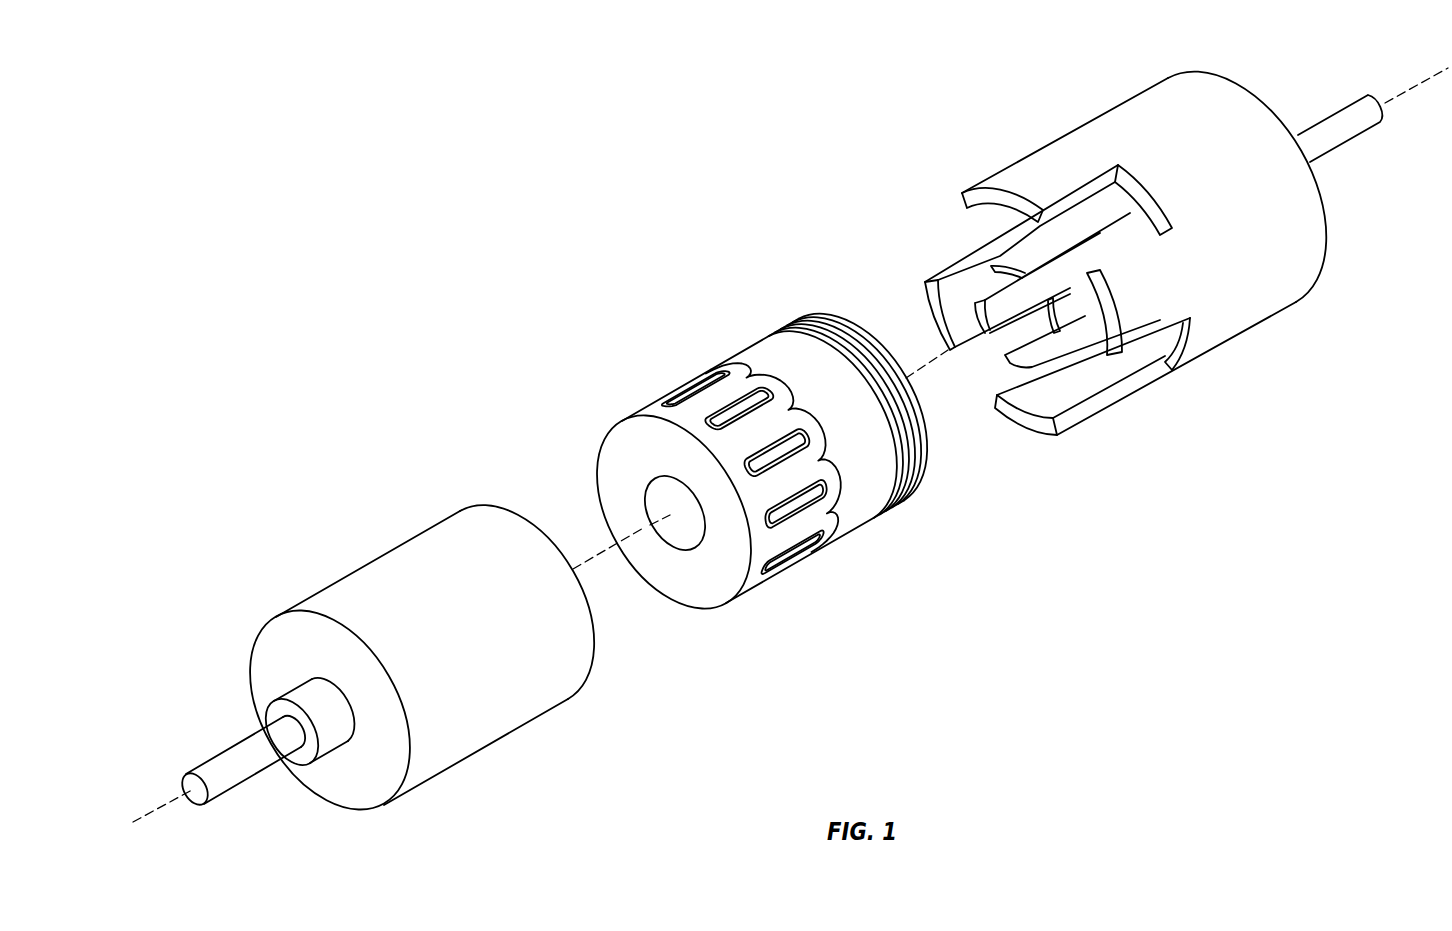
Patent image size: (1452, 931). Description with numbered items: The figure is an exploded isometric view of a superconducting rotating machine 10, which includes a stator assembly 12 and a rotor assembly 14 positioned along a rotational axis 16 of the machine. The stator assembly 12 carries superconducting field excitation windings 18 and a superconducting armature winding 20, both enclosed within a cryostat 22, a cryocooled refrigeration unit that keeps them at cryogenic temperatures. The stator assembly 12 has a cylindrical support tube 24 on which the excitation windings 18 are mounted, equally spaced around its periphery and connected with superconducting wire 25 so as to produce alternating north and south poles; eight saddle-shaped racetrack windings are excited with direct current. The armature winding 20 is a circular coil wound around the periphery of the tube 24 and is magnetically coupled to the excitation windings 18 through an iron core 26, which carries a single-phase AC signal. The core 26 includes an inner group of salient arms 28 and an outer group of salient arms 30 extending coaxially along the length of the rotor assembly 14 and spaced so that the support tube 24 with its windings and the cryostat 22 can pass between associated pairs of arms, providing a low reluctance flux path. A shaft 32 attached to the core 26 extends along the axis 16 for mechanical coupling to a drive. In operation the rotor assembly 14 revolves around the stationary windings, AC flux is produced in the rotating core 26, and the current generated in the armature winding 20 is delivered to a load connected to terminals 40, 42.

The superconducting rotating machine 10 is at (632, 234).
The stator assembly 12 is at (848, 560).
The rotor assembly 14 is at (1232, 380).
The rotational axis 16 is at (575, 565).
The superconducting field excitation windings 18 is at (770, 393).
The superconducting armature winding 20 is at (902, 493).
The cryostat 22 is at (502, 730).
The cylindrical support tube 24 is at (767, 360).
The superconducting wire 25 is at (823, 463).
The iron core 26 is at (1328, 266).
The inner group of salient arms 28 is at (1128, 200).
The outer group of salient arms 30 is at (998, 180).
The shaft 32 is at (1335, 148).
The terminal 40 is at (953, 470).
The terminal 42 is at (806, 320).